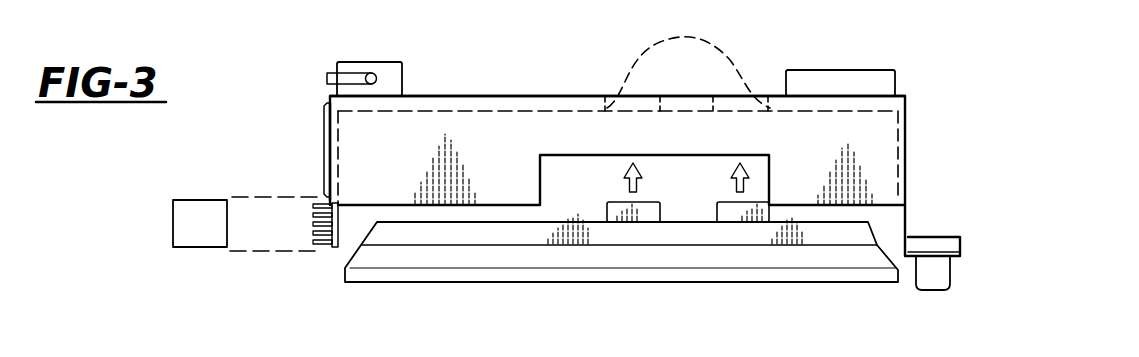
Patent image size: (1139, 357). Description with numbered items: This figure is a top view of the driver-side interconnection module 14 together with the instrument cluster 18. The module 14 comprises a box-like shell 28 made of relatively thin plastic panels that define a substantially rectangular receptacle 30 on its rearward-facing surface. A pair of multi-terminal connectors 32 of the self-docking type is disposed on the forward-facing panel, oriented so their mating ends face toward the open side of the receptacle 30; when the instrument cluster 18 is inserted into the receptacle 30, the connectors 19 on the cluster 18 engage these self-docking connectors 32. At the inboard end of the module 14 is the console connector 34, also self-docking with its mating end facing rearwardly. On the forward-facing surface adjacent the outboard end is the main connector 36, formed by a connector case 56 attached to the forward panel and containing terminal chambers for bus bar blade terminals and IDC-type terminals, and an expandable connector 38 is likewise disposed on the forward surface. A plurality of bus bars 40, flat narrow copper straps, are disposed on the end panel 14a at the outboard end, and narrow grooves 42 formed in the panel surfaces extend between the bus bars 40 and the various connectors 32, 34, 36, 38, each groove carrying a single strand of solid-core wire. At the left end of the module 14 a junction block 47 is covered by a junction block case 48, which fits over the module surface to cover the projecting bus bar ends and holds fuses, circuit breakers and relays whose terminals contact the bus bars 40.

The driver-side interconnection module 14 is at (994, 108).
The end panel 14a is at (330, 178).
The instrument cluster 18 is at (469, 262).
The connectors 19 is at (727, 216).
The box-like shell 28 is at (893, 131).
The receptacle 30 is at (579, 194).
The multi-terminal connectors 32 is at (688, 67).
The console connector 34 is at (944, 270).
The main connector 36 is at (337, 62).
The expandable connector 38 is at (885, 82).
The bus bars 40 is at (323, 120).
The grooves 42 is at (333, 148).
The junction block 47 is at (309, 225).
The junction block case 48 is at (208, 208).
The connector case 56 is at (398, 78).